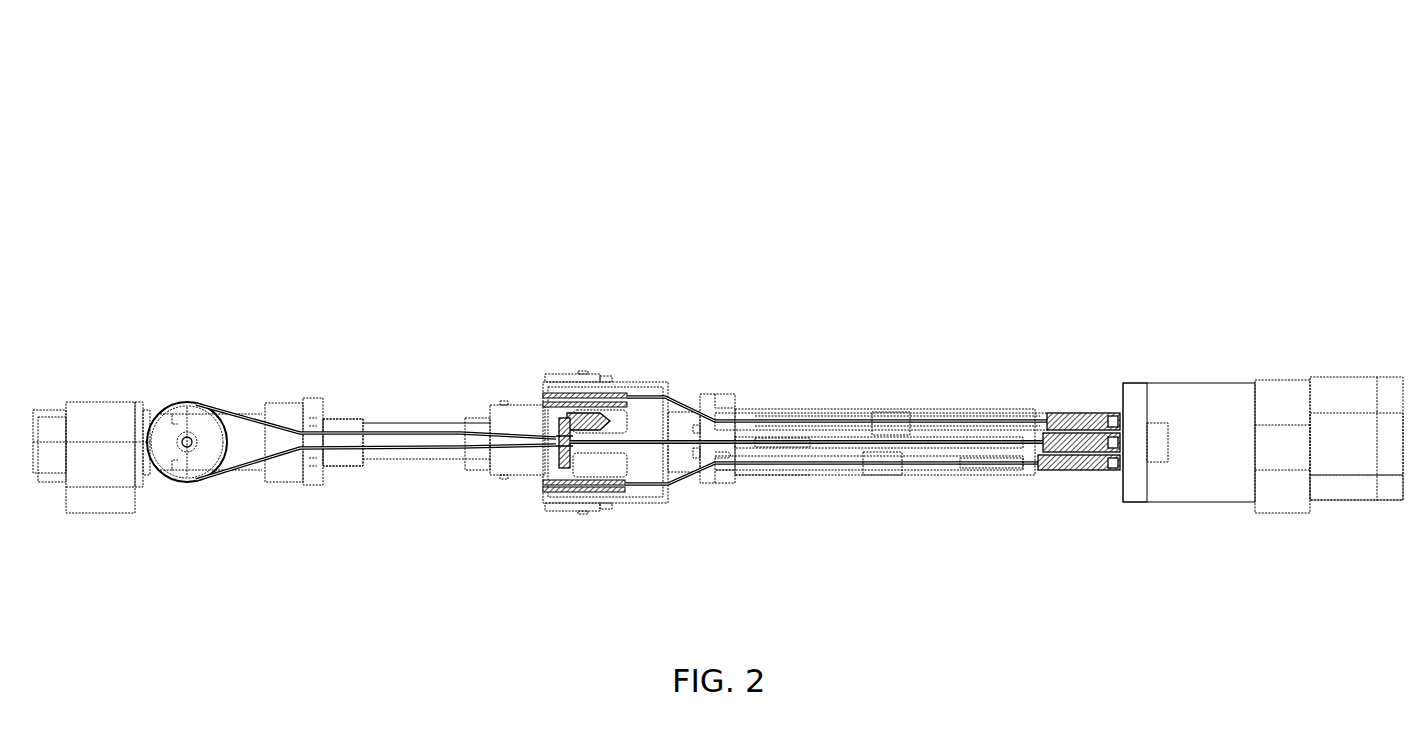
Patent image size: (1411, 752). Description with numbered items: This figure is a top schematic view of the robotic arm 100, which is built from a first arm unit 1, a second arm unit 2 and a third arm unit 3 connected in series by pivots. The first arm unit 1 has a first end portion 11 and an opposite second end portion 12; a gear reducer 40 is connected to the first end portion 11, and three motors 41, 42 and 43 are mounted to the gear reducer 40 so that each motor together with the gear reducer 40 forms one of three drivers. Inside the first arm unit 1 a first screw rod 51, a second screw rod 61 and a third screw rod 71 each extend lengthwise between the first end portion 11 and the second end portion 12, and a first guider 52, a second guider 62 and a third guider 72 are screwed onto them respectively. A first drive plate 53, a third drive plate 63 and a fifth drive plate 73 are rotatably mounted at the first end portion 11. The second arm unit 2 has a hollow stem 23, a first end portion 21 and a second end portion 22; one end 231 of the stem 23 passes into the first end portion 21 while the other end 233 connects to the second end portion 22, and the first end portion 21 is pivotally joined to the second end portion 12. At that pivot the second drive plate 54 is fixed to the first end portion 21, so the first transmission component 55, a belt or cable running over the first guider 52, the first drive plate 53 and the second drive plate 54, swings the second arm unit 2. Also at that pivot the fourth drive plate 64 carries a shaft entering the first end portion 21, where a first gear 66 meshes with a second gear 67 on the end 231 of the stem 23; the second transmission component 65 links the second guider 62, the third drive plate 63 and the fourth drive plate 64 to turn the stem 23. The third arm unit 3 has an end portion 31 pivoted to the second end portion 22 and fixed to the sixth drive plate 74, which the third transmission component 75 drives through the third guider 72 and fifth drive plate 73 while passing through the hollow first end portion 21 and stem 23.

The robotic arm 100 is at (764, 176).
The first arm unit 1 is at (909, 545).
The second arm unit 2 is at (435, 546).
The third arm unit 3 is at (209, 543).
The first end portion 11 is at (1133, 395).
The second end portion 12 is at (655, 383).
The first end portion 21 is at (543, 410).
The second end portion 22 is at (277, 420).
The stem 23 is at (398, 420).
The end portion 31 is at (153, 405).
The gear reducer 40 is at (1190, 395).
The motor 41 is at (1362, 390).
The motor 42 is at (1345, 430).
The motor 43 is at (1355, 485).
The first screw rod 51 is at (975, 470).
The first guider 52 is at (884, 475).
The first drive plate 53 is at (1055, 472).
The second drive plate 54 is at (612, 490).
The first transmission component 55 is at (935, 470).
The second screw rod 61 is at (978, 418).
The second guider 62 is at (882, 413).
The third drive plate 63 is at (1043, 416).
The fourth drive plate 64 is at (603, 400).
The second transmission component 65 is at (812, 418).
The first gear 66 is at (568, 410).
The second gear 67 is at (552, 432).
The third screw rod 71 is at (822, 452).
The third guider 72 is at (907, 438).
The fifth drive plate 73 is at (1040, 446).
The sixth drive plate 74 is at (192, 402).
The third transmission component 75 is at (405, 460).
The end of the stem 231 is at (503, 455).
The other end of the stem 233 is at (343, 465).